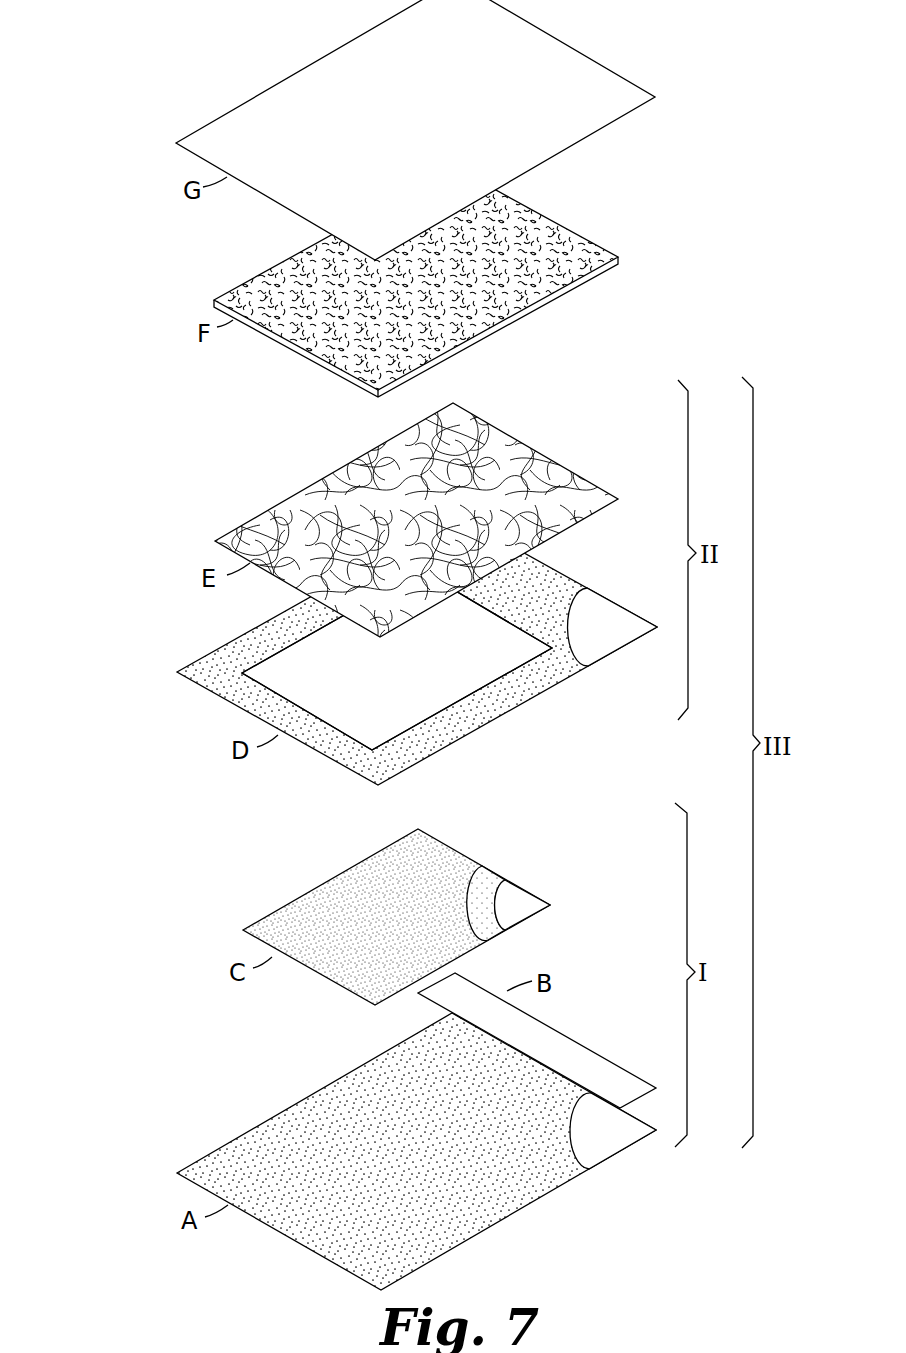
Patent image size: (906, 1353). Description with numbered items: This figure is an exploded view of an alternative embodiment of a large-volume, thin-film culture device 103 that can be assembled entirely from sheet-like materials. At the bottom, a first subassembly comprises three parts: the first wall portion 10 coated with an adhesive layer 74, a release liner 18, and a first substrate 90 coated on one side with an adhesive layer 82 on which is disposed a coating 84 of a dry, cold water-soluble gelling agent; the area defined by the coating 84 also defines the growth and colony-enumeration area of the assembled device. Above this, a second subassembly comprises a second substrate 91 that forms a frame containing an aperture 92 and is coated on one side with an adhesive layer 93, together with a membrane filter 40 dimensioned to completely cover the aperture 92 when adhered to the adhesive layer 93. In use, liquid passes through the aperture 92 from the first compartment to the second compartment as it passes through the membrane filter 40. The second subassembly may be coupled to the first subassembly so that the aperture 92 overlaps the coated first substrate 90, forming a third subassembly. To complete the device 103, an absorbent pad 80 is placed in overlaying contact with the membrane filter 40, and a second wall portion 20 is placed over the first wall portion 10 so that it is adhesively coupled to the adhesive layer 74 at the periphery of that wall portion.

The device 103 is at (346, 645).
The second wall portion 20 is at (630, 93).
The absorbent pad 80 is at (573, 243).
The membrane filter 40 is at (505, 445).
The second substrate 91 is at (621, 620).
The aperture 92 is at (303, 645).
The adhesive layer 93 is at (512, 690).
The coating 84 is at (440, 848).
The adhesive layer 82 is at (496, 872).
The first substrate 90 is at (535, 905).
The release liner 18 is at (558, 1040).
The first wall portion 10 is at (625, 1135).
The adhesive layer 74 is at (537, 1187).